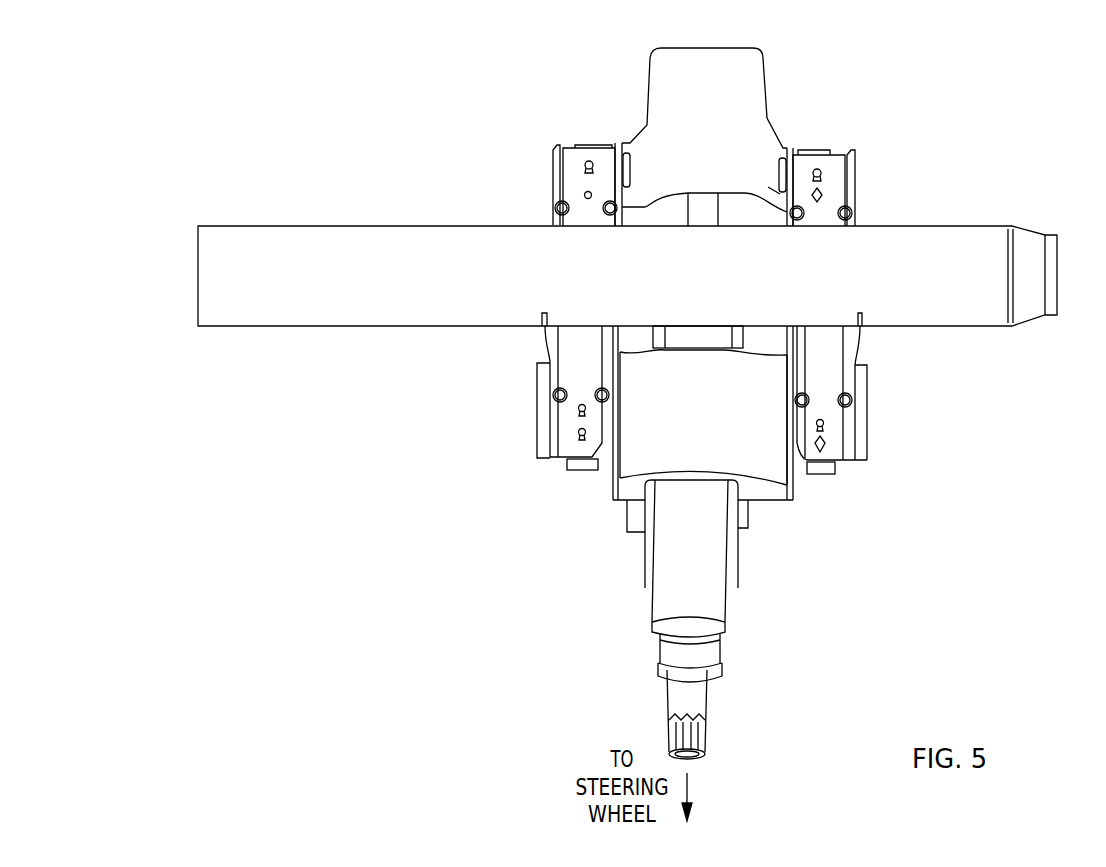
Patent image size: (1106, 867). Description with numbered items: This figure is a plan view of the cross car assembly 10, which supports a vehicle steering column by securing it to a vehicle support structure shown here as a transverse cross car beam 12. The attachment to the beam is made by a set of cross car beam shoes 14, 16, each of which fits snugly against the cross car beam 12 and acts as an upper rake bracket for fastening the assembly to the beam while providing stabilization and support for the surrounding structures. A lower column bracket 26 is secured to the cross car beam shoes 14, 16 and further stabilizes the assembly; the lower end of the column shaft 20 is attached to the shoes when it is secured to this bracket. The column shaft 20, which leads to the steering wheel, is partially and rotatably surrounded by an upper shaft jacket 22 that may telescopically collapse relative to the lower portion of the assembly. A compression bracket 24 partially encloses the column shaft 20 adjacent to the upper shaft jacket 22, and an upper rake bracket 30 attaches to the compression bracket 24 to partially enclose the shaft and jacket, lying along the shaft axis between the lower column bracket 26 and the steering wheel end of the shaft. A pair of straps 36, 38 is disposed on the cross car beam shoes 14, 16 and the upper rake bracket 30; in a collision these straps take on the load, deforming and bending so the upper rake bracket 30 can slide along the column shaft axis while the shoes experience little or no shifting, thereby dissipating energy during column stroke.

The cross car assembly 10 is at (318, 608).
The cross car beam 12 is at (298, 233).
The cross car beam shoe 14 is at (558, 352).
The cross car beam shoe 16 is at (835, 352).
The column shaft 20 is at (703, 213).
The upper shaft jacket 22 is at (720, 617).
The compression bracket 24 is at (645, 553).
The lower column bracket 26 is at (740, 111).
The upper rake bracket 30 is at (730, 462).
The strap 36 is at (572, 470).
The strap 38 is at (822, 475).